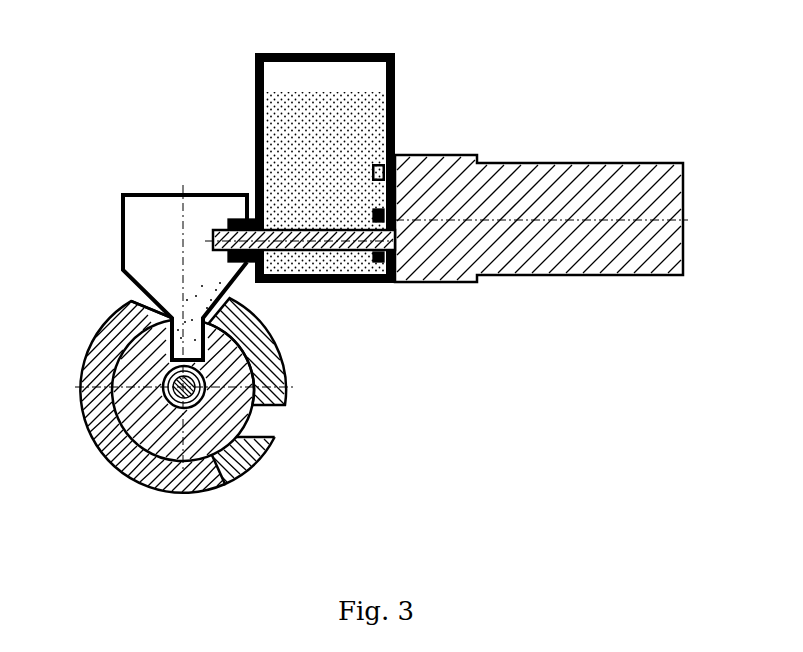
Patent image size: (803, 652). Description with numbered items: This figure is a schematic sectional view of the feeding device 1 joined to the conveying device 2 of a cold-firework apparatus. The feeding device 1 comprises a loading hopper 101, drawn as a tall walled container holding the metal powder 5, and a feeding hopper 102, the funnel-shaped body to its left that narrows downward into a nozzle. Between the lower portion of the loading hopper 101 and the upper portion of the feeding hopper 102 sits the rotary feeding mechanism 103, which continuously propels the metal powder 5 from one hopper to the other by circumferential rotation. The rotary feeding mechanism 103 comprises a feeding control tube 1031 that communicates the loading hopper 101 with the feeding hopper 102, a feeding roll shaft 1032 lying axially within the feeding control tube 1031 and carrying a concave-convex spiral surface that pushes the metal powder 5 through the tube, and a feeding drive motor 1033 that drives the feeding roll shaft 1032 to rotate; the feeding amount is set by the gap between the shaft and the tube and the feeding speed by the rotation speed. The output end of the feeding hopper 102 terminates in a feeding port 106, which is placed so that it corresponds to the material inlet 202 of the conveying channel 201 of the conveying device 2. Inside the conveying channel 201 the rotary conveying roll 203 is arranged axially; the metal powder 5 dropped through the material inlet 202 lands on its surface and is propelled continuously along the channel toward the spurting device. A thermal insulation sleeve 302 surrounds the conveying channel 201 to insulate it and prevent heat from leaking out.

The feeding device 1 is at (327, 53).
The loading hopper 101 is at (396, 83).
The feeding hopper 102 is at (167, 250).
The rotary feeding mechanism 103 is at (200, 62).
The feeding control tube 1031 is at (247, 215).
The feeding roll shaft 1032 is at (220, 230).
The feeding drive motor 1033 is at (380, 212).
The feeding port 106 is at (128, 300).
The conveying device 2 is at (380, 377).
The conveying channel 201 is at (270, 443).
The material inlet 202 is at (258, 359).
The rotary conveying roll 203 is at (205, 396).
The thermal insulation sleeve 302 is at (243, 467).
The metal powder 5 is at (353, 137).